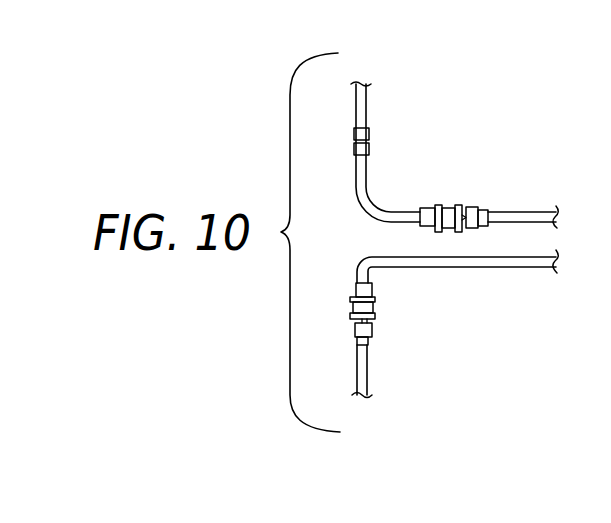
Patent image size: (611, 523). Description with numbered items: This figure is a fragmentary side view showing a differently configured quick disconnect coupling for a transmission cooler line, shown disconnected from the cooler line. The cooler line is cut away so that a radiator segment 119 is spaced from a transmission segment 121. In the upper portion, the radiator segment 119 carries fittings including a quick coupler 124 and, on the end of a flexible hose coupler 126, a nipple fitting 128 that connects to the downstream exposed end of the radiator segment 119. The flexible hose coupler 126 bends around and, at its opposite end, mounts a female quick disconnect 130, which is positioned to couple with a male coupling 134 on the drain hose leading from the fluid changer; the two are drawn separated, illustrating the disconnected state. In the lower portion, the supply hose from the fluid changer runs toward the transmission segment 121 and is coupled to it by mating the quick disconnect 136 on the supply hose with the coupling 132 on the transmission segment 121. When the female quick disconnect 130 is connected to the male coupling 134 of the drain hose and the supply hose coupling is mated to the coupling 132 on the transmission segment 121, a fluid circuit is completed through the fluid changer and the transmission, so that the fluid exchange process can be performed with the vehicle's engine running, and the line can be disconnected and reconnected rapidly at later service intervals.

The radiator segment 119 is at (366, 90).
The quick coupler 124 is at (370, 130).
The nipple fitting 128 is at (371, 147).
The flexible hose coupler 126 is at (380, 205).
The female quick disconnect 130 is at (445, 205).
The male coupling 134 is at (472, 207).
The quick disconnect 136 is at (376, 302).
The quick disconnect coupling 132 is at (372, 330).
The transmission segment 121 is at (368, 374).